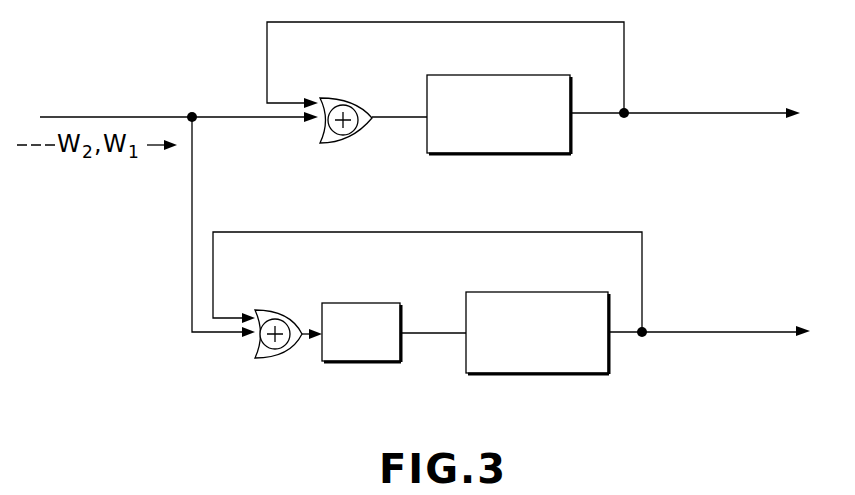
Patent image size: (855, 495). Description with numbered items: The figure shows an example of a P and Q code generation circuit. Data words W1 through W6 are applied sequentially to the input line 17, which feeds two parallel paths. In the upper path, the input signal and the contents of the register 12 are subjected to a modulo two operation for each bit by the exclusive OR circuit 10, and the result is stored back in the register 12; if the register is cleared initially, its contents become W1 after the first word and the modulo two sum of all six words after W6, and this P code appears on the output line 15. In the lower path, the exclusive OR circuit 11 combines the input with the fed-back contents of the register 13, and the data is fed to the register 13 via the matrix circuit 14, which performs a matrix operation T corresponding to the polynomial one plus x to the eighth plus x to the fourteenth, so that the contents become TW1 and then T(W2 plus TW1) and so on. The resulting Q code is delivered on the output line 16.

The exclusive OR circuit 10 is at (345, 137).
The exclusive OR circuit 11 is at (253, 350).
The register 12 is at (505, 75).
The register 13 is at (525, 292).
The matrix circuit 14 is at (317, 352).
The output line 15 is at (680, 113).
The output line 16 is at (680, 331).
The input line 17 is at (135, 117).